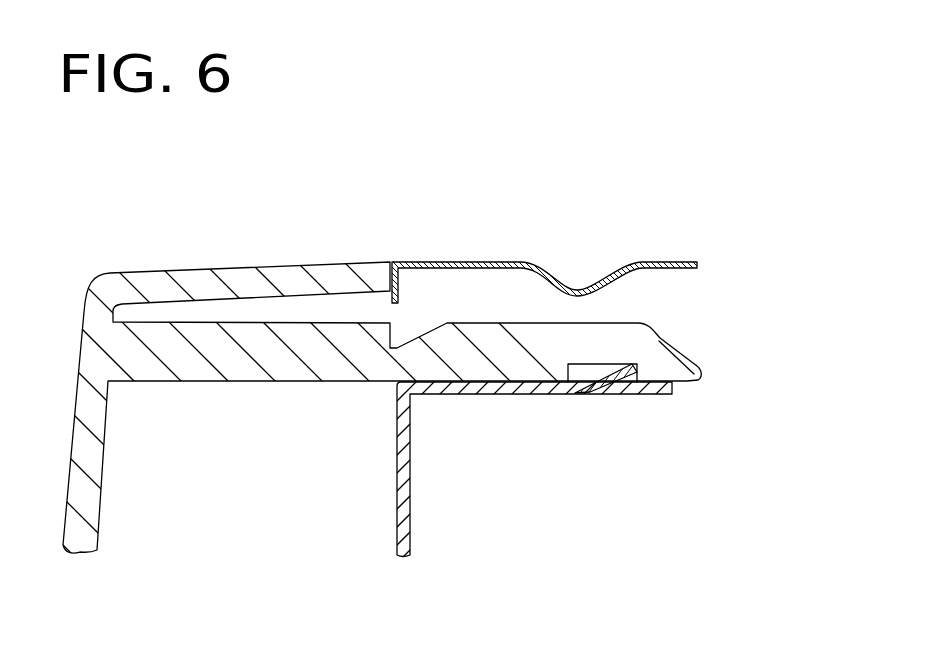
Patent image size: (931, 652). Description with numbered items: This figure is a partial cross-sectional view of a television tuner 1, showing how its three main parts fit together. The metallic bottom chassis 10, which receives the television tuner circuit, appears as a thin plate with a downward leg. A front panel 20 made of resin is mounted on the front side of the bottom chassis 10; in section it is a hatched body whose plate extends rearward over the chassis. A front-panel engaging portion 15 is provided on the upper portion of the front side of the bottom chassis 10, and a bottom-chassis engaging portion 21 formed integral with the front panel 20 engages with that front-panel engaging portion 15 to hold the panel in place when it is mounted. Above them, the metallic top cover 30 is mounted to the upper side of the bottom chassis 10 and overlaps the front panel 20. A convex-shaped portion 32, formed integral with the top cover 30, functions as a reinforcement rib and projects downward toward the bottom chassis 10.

The television tuner 1 is at (405, 152).
The bottom chassis 10 is at (393, 447).
The front-panel engaging portion 15 is at (548, 388).
The front panel 20 is at (180, 270).
The bottom-chassis engaging portion 21 is at (542, 323).
The top cover 30 is at (457, 263).
The convex-shaped portion 32 is at (560, 283).